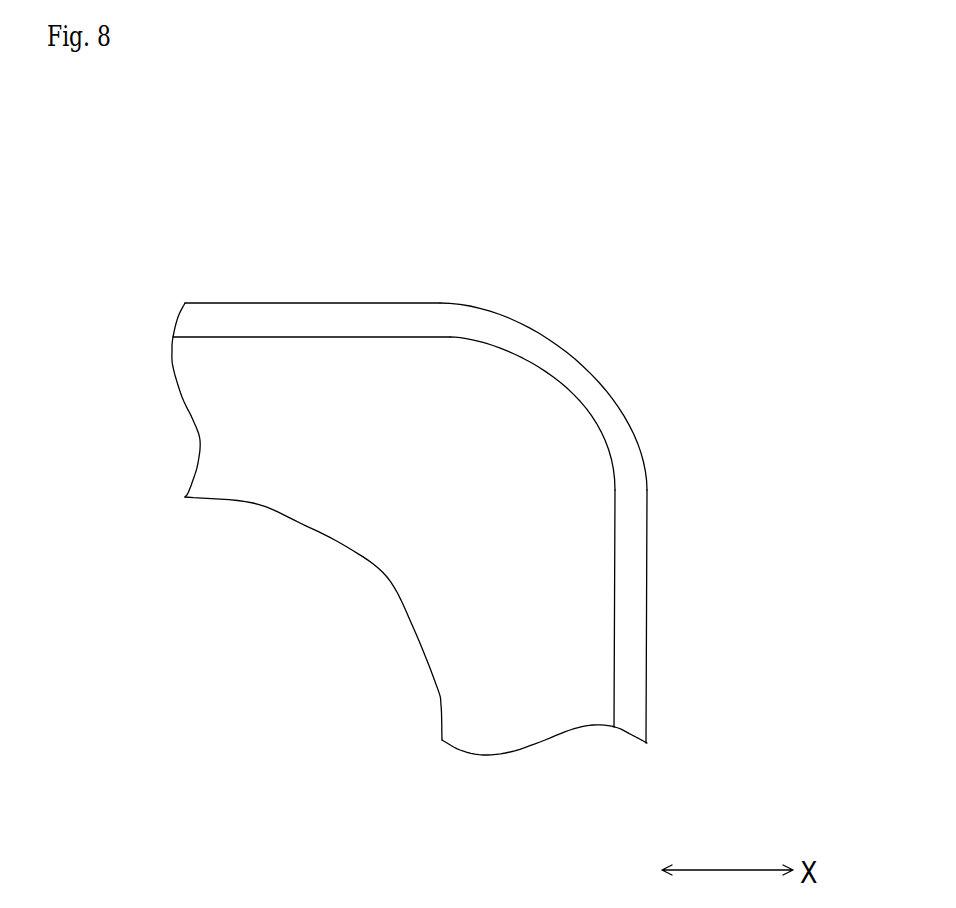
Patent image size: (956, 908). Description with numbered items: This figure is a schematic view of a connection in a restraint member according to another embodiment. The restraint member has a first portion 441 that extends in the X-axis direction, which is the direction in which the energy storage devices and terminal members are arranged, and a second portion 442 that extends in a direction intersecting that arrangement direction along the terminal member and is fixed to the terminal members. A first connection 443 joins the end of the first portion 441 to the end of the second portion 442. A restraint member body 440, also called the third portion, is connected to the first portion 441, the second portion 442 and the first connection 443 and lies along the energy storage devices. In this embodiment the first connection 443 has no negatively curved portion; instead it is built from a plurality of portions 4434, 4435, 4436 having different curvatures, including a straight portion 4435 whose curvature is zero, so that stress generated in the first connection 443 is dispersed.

The restraint member body 440 is at (357, 522).
The first portion 441 is at (456, 280).
The second portion 442 is at (673, 500).
The first connection 443 is at (575, 339).
The portion of the first connection 4434 is at (498, 312).
The straight portion 4435 is at (556, 348).
The portion of the first connection 4436 is at (632, 423).